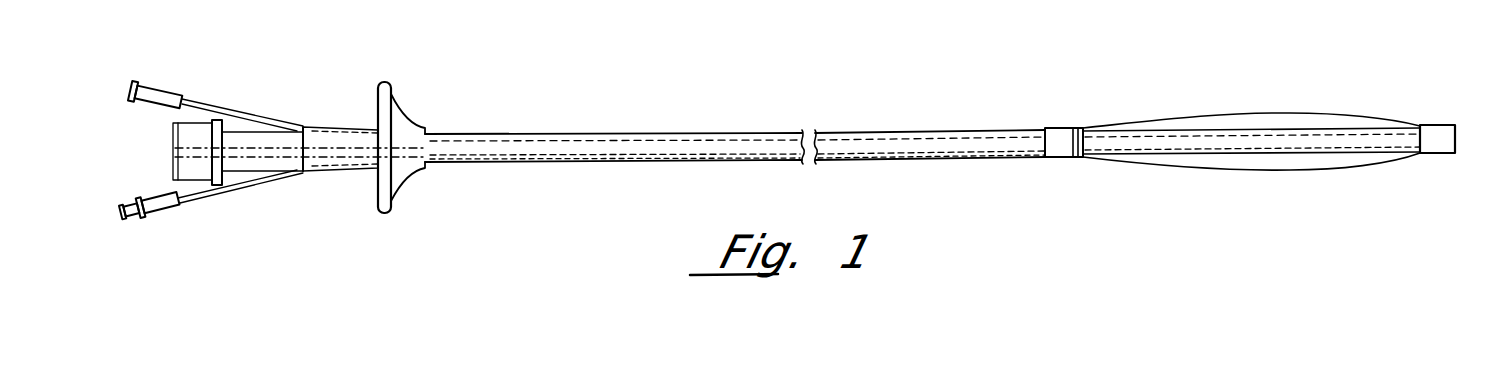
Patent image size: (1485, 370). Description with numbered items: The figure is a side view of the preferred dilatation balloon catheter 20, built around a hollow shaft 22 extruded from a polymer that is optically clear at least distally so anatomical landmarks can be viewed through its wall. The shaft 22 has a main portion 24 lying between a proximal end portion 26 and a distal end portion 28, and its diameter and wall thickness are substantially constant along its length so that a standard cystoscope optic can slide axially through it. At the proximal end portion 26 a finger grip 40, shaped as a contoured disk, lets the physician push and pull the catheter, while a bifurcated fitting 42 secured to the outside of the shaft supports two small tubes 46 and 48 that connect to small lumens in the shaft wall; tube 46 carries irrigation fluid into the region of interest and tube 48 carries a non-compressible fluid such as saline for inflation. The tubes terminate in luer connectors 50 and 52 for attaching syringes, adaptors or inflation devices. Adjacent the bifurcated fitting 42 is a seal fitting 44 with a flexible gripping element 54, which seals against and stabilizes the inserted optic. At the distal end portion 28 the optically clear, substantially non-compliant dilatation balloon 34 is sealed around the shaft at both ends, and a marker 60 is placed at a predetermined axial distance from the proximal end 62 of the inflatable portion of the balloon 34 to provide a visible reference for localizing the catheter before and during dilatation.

The catheter 20 is at (775, 102).
The hollow shaft 22 is at (926, 131).
The main portion 24 is at (679, 163).
The proximal end portion 26 is at (345, 107).
The distal end portion 28 is at (1410, 112).
The dilatation balloon 34 is at (1290, 171).
The finger grip 40 is at (404, 108).
The bifurcated fitting 42 is at (343, 175).
The fitting 44 is at (173, 143).
The tube 46 is at (194, 104).
The tube 48 is at (197, 196).
The luer connector 50 is at (163, 86).
The luer connector 52 is at (143, 200).
The flexible gripping element 54 is at (172, 134).
The marker 60 is at (1076, 128).
The end of the inflatable proximal portion of the balloon 62 is at (1080, 158).